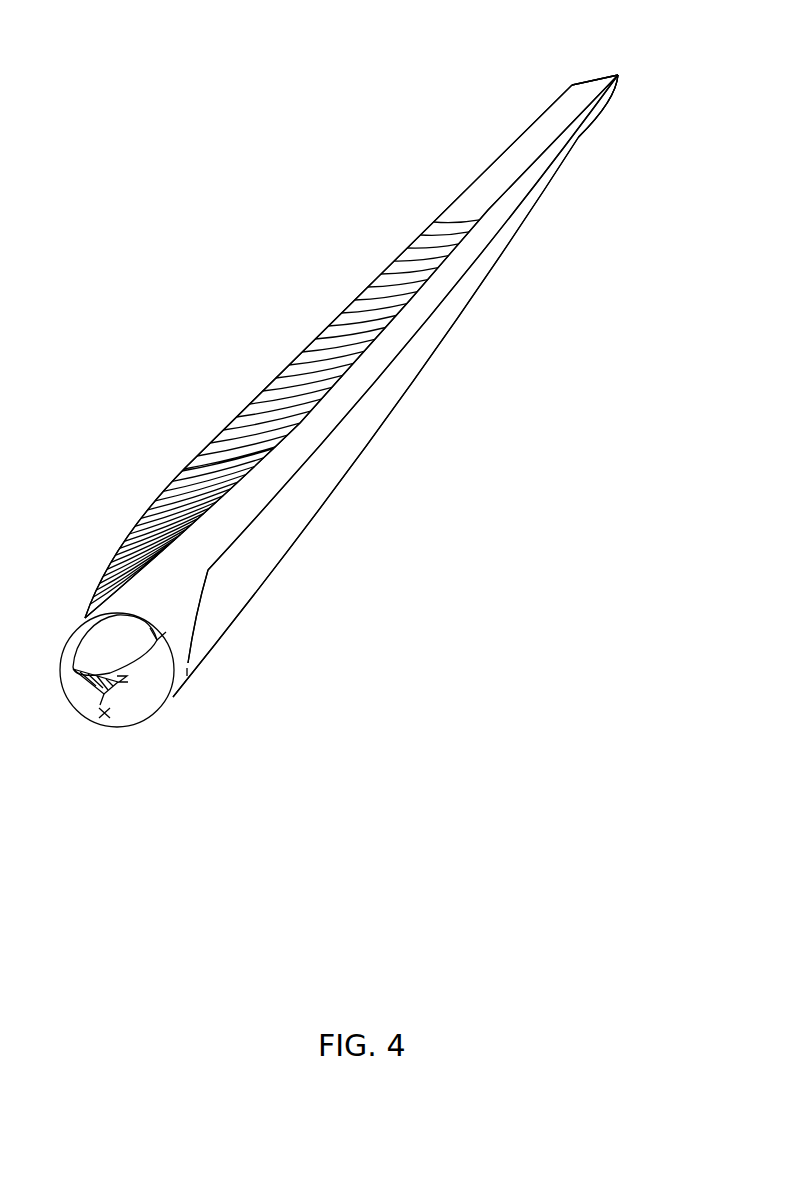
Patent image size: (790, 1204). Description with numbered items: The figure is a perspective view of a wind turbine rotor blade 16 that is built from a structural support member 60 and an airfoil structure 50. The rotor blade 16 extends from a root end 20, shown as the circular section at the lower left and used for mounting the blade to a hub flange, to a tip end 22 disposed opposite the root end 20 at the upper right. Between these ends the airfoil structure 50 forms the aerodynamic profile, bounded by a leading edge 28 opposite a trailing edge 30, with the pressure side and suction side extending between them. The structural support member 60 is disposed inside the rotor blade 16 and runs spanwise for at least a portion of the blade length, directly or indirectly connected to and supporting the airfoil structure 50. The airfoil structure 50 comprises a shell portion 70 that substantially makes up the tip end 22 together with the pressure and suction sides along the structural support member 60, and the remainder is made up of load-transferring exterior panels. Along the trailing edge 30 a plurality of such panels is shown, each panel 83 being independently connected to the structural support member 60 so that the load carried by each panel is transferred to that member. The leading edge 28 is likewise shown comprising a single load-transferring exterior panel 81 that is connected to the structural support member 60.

The rotor blade 16 is at (160, 258).
The root end 20 is at (140, 727).
The tip end 22 is at (618, 75).
The leading edge 28 is at (449, 329).
The trailing edge 30 is at (330, 323).
The airfoil structure 50 is at (432, 213).
The structural support member 60 is at (455, 443).
The shell portion 70 is at (607, 129).
The load-transferring exterior panel 81 is at (283, 562).
The load-transferring exterior panel 83 is at (177, 469).